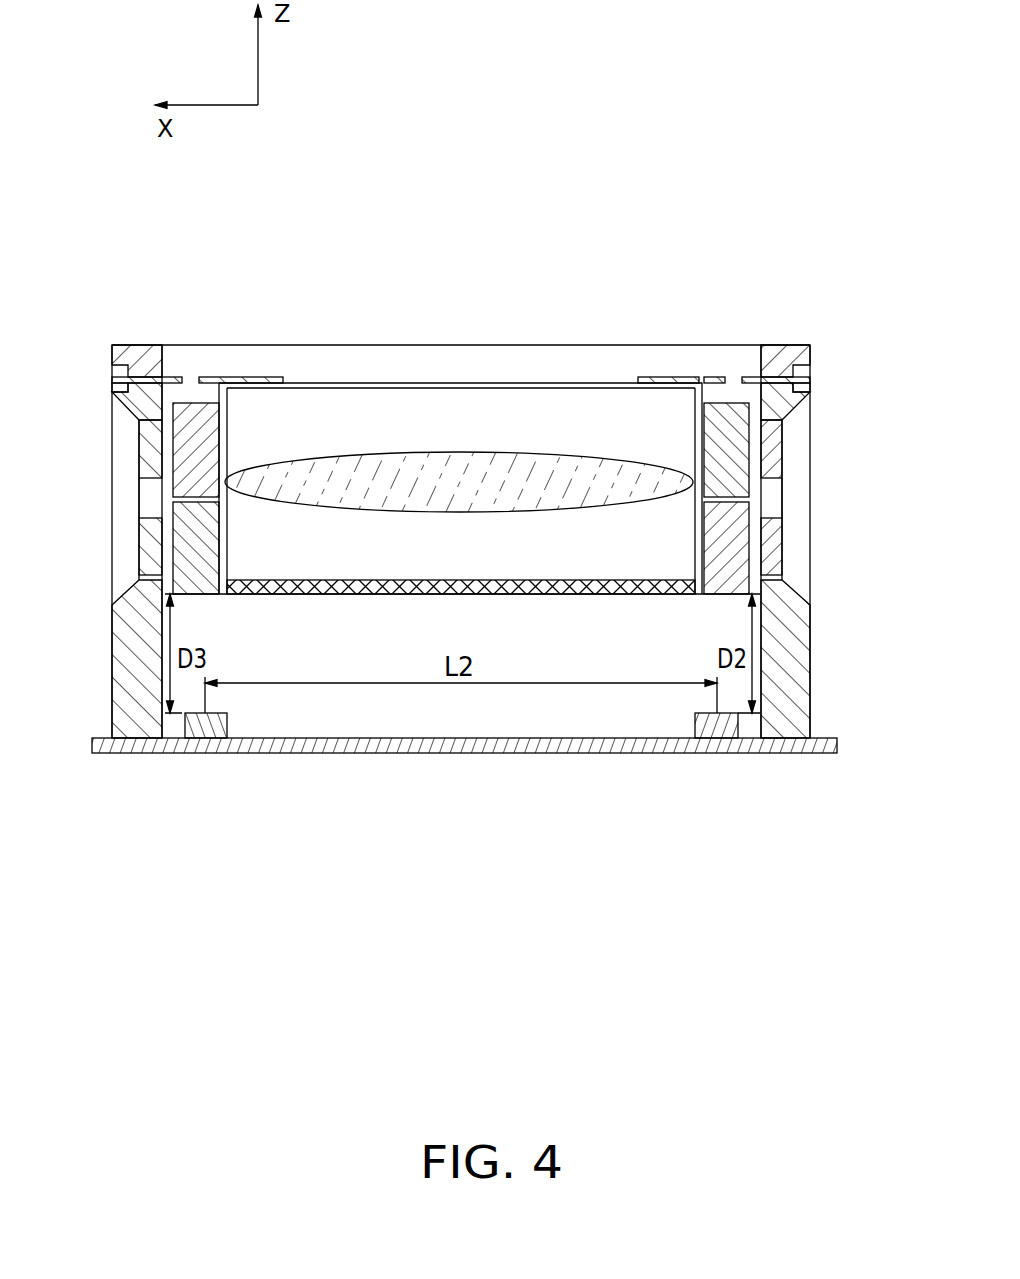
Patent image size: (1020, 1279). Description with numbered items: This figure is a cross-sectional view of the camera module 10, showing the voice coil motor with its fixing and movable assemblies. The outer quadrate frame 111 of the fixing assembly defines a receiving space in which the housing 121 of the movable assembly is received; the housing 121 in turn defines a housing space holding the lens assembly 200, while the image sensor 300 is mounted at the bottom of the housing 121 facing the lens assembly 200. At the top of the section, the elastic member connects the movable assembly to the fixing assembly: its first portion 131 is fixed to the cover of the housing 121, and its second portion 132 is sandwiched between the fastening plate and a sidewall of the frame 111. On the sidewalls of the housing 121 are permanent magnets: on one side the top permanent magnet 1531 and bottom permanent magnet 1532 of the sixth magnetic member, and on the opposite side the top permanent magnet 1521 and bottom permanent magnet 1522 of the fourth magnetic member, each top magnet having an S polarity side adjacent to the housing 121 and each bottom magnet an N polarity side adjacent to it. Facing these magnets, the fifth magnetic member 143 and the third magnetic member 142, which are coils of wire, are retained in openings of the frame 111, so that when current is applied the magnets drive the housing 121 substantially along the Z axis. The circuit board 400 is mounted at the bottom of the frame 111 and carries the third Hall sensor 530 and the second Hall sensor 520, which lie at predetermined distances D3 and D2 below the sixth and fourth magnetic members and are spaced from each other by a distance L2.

The camera module 10 is at (442, 190).
The first portion 131 is at (153, 385).
The second portion 132 is at (768, 377).
The frame 111 is at (125, 680).
The housing 121 is at (222, 398).
The lens assembly 200 is at (332, 490).
The image sensor 300 is at (560, 585).
The fifth magnetic member 143 is at (142, 443).
The third magnetic member 142 is at (770, 465).
The top permanent magnet 1531 is at (200, 467).
The bottom permanent magnet 1532 is at (195, 560).
The top permanent magnet 1521 is at (723, 457).
The bottom permanent magnet 1522 is at (758, 597).
The circuit board 400 is at (133, 747).
The third Hall sensor 530 is at (208, 733).
The second Hall sensor 520 is at (718, 728).